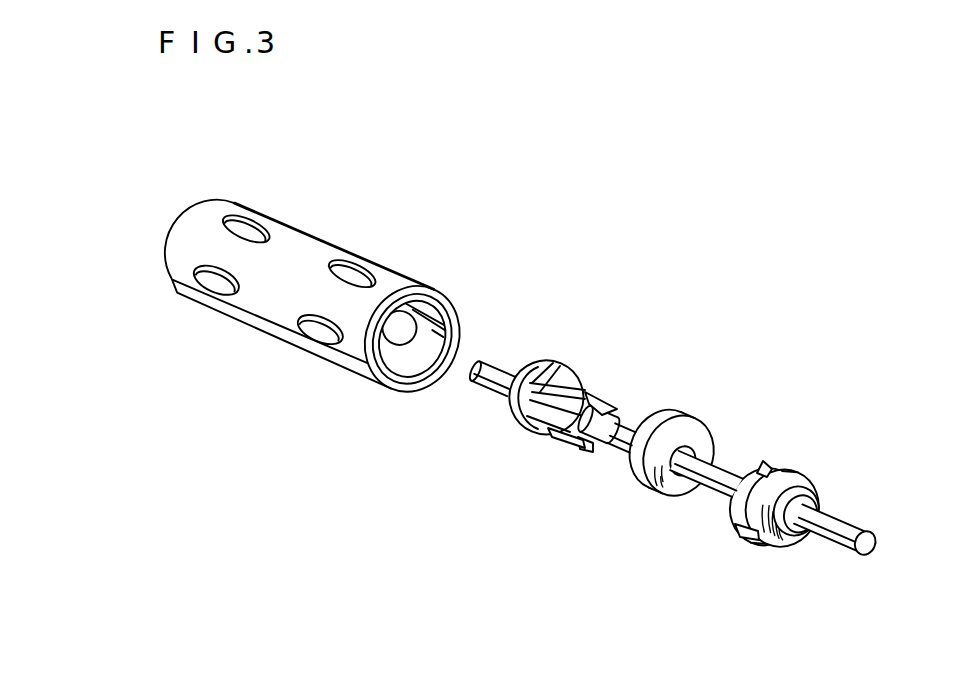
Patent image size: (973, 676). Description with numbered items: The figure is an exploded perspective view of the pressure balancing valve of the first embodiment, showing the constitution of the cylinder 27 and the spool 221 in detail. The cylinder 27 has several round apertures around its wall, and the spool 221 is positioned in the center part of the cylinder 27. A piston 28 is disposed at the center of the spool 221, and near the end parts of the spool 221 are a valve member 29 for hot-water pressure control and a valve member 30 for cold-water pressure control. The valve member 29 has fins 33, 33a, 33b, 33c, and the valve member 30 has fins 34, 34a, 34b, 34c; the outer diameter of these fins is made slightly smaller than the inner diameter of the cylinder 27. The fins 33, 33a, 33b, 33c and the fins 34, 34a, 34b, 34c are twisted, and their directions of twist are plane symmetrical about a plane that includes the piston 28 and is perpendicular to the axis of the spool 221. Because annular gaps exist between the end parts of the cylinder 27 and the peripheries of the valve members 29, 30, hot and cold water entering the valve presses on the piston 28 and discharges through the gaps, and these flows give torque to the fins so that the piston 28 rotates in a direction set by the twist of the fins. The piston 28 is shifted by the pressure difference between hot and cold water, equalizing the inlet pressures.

The cylinder 27 is at (307, 238).
The piston 28 is at (660, 495).
The valve member for hot-water pressure control 29 is at (516, 423).
The valve member for cold-water pressure control 30 is at (770, 467).
The fin 33 is at (582, 378).
The fin 33a is at (613, 410).
The fin 33b is at (592, 452).
The fin 33c is at (560, 445).
The fin 34 is at (765, 458).
The fin 34a is at (807, 473).
The fin 34b is at (737, 537).
The fin 34c is at (722, 507).
The spool 221 is at (870, 548).